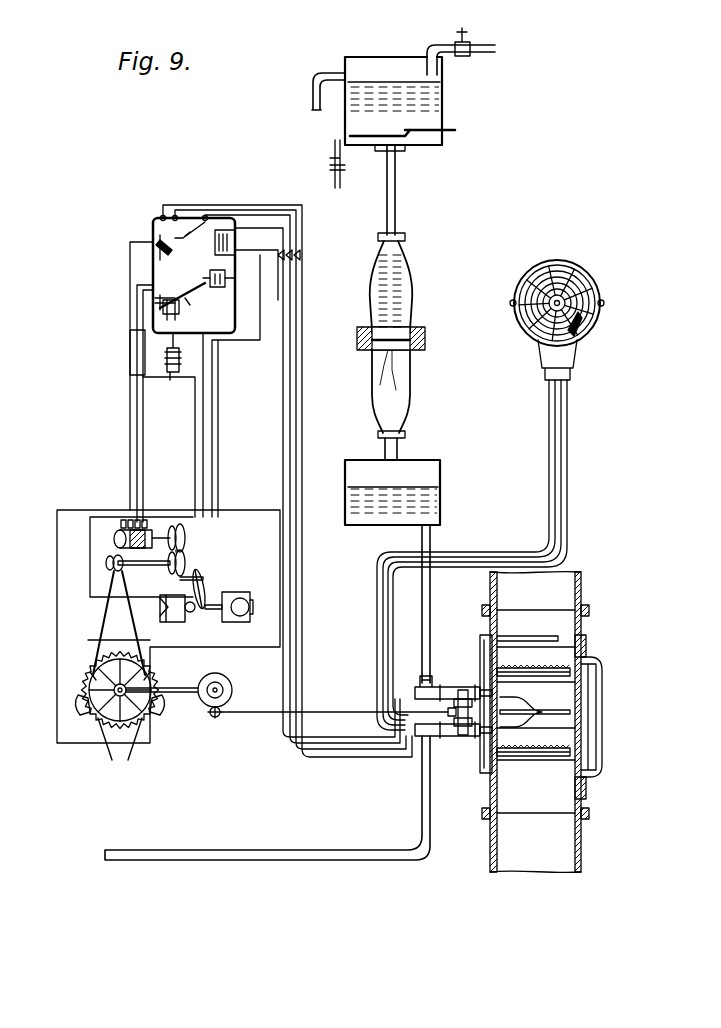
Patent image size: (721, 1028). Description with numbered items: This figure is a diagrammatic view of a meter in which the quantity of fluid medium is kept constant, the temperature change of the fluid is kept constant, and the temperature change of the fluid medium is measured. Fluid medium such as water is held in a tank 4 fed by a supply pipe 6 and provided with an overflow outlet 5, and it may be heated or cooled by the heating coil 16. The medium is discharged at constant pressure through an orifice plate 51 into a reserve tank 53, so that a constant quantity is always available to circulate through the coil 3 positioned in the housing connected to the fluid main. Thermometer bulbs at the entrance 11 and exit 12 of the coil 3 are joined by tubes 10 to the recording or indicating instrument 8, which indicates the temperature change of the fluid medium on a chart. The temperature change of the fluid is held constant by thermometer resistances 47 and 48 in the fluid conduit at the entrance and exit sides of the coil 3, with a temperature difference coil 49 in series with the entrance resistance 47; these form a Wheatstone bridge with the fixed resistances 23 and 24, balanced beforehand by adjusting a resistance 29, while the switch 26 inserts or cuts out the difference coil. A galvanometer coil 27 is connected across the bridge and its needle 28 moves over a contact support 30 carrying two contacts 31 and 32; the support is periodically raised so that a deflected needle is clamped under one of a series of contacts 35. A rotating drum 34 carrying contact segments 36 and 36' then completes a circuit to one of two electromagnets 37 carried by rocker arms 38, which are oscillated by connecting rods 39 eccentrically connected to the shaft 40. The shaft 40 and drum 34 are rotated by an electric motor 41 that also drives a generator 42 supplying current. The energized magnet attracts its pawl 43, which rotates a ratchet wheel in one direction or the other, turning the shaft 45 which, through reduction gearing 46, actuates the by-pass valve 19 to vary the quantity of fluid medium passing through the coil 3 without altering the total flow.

The coil 3 is at (590, 710).
The tank 4 is at (442, 92).
The overflow outlet 5 is at (312, 100).
The supply pipe 6 is at (475, 40).
The recording or indicating instrument 8 is at (598, 318).
The tubes 10 is at (562, 466).
The entrance of the coil 11 is at (430, 688).
The exit of the coil 12 is at (418, 738).
The heating coil 16 is at (430, 136).
The by-pass valve 19 is at (462, 740).
The fixed resistance 23 is at (178, 220).
The fixed resistance 24 is at (195, 235).
The switch 26 is at (160, 258).
The galvanometer coil 27 is at (226, 278).
The galvanometer needle 28 is at (195, 300).
The adjustable resistance 29 is at (225, 232).
The contact support 30 is at (190, 305).
The contact 31 is at (160, 318).
The contact 32 is at (190, 308).
The rotating drum 34 is at (115, 555).
The contacts 35 is at (155, 305).
The contact segment 36 is at (128, 511).
The contact segment 36' is at (170, 517).
The electromagnets 37 is at (135, 722).
The rocker arms 38 is at (92, 678).
The connecting rods 39 is at (112, 620).
The shaft 40 is at (145, 567).
The electric motor 41 is at (238, 592).
The generator 42 is at (172, 620).
The pawl 43 is at (78, 705).
The shaft 45 is at (186, 695).
The reduction gearing 46 is at (232, 685).
The thermometer resistance 47 is at (585, 750).
The thermometer resistance 48 is at (580, 668).
The temperature difference coil 49 is at (560, 632).
The orifice plate 51 is at (392, 335).
The reserve tank 53 is at (442, 470).